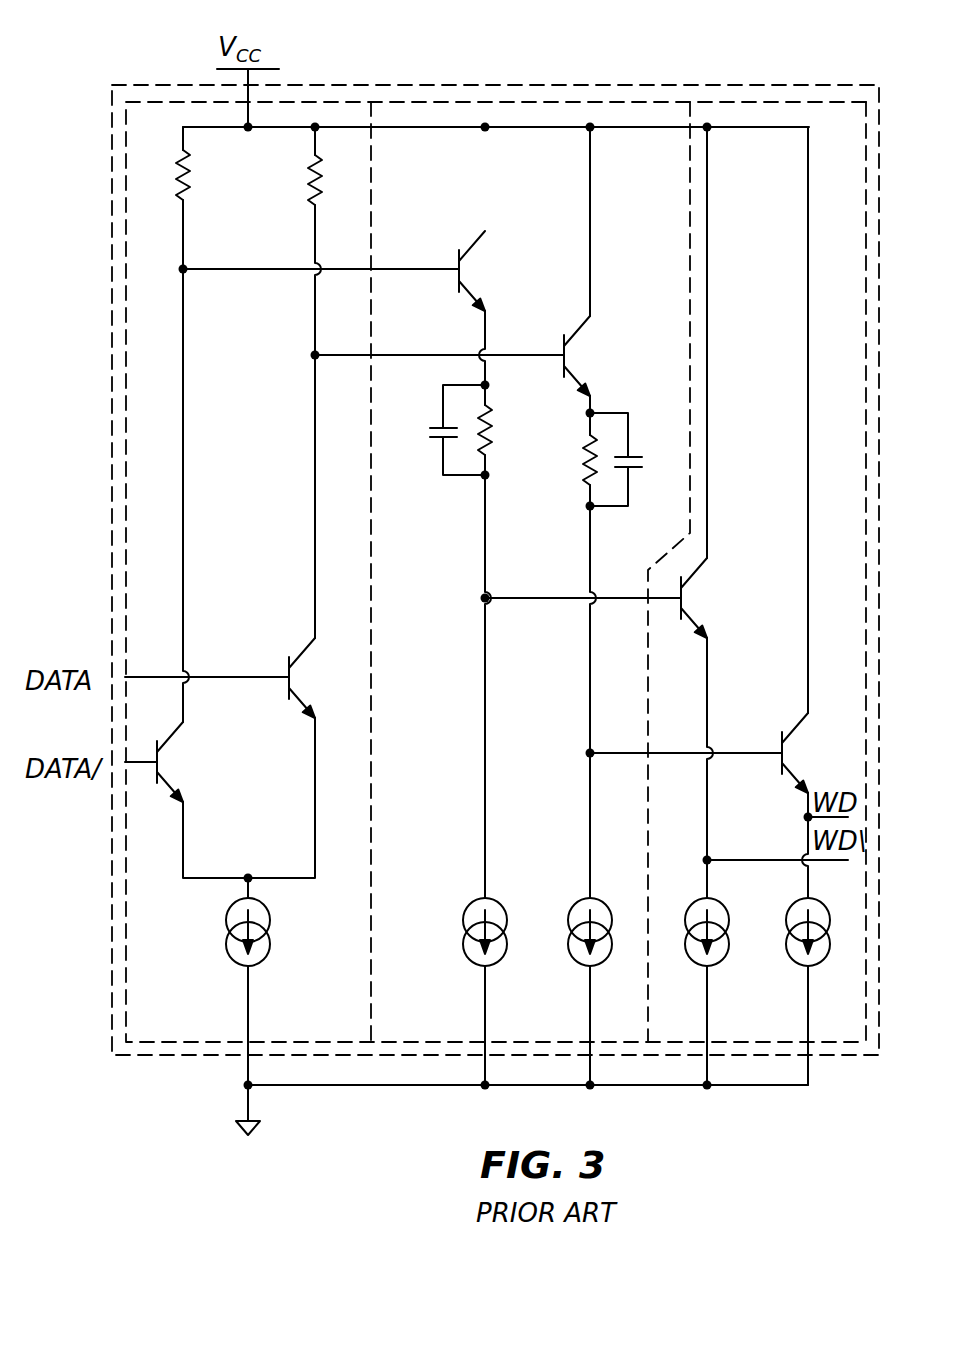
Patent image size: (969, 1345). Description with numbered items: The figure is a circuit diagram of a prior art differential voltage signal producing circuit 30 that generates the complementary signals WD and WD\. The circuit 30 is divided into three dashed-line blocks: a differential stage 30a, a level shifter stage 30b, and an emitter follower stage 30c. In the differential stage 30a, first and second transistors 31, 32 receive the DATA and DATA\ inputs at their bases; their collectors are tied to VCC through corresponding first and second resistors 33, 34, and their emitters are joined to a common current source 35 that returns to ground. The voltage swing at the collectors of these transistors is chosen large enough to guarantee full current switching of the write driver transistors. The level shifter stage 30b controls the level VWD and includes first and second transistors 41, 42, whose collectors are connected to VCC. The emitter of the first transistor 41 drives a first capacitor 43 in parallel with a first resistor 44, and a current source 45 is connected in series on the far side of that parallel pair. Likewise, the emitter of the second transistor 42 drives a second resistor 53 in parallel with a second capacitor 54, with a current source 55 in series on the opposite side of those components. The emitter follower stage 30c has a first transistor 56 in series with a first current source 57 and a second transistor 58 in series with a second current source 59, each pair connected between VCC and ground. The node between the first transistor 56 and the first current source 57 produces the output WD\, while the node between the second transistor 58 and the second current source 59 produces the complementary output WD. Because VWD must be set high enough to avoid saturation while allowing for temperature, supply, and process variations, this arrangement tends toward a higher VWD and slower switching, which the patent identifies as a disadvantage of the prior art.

The differential voltage signal producing circuit 30 is at (522, 85).
The differential stage 30a is at (222, 1040).
The level shifter stage 30b is at (452, 1040).
The emitter follower stage 30c is at (787, 1043).
The first transistor 31 is at (161, 775).
The second transistor 32 is at (284, 668).
The first resistor 33 is at (180, 161).
The second resistor 34 is at (314, 161).
The current source 35 is at (272, 925).
The first transistor 41 is at (458, 256).
The second transistor 42 is at (561, 348).
The first capacitor 43 is at (438, 429).
The first resistor 44 is at (488, 406).
The current source 45 is at (499, 912).
The second resistor 53 is at (585, 440).
The second capacitor 54 is at (636, 458).
The current source 55 is at (606, 912).
The first transistor 56 is at (683, 612).
The first current source 57 is at (722, 918).
The second transistor 58 is at (782, 748).
The second current source 59 is at (828, 919).